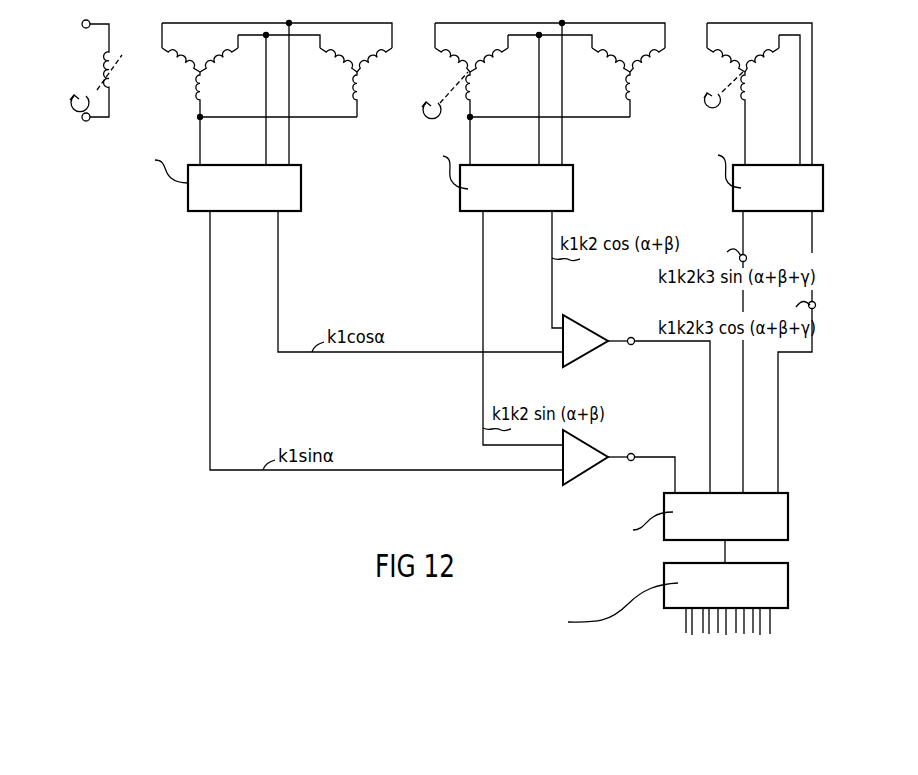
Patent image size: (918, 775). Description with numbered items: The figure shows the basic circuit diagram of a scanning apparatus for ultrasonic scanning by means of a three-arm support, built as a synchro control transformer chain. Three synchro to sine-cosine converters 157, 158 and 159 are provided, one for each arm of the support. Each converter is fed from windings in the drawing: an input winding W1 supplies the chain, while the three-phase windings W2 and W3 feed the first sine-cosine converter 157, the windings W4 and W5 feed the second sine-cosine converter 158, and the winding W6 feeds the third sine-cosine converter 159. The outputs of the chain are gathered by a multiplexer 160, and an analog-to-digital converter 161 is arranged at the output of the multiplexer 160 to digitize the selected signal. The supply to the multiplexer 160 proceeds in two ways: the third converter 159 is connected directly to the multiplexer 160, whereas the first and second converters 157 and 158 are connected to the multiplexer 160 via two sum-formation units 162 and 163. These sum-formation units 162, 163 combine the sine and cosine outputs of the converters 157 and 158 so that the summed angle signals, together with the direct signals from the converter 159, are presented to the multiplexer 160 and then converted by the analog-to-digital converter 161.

The synchro to sine-cosine converter 157 is at (189, 178).
The synchro to sine-cosine converter 158 is at (446, 176).
The synchro to sine-cosine converter 159 is at (711, 176).
The multiplexer 160 is at (634, 518).
The analog-to-digital converter 161 is at (619, 611).
The sum-formation unit 162 is at (590, 366).
The sum-formation unit 163 is at (590, 482).
The input winding W1 is at (118, 66).
The three-phase winding W2 is at (226, 71).
The three-phase winding W3 is at (383, 71).
The three-phase winding W4 is at (498, 71).
The three-phase winding W5 is at (656, 71).
The three-phase winding W6 is at (730, 74).